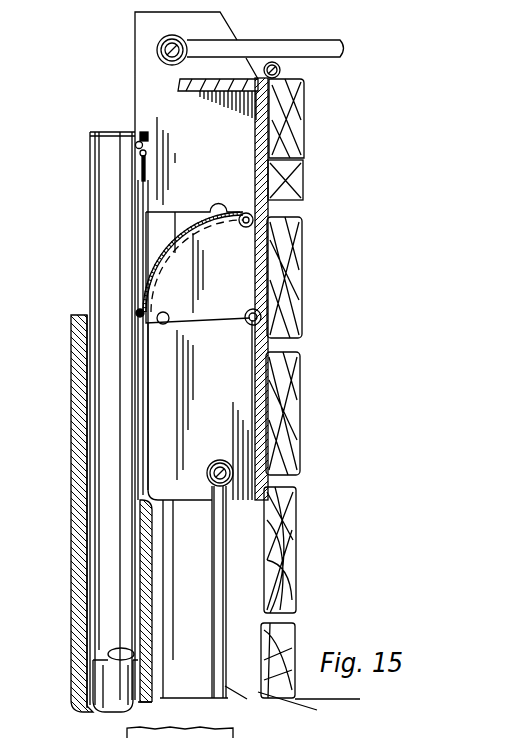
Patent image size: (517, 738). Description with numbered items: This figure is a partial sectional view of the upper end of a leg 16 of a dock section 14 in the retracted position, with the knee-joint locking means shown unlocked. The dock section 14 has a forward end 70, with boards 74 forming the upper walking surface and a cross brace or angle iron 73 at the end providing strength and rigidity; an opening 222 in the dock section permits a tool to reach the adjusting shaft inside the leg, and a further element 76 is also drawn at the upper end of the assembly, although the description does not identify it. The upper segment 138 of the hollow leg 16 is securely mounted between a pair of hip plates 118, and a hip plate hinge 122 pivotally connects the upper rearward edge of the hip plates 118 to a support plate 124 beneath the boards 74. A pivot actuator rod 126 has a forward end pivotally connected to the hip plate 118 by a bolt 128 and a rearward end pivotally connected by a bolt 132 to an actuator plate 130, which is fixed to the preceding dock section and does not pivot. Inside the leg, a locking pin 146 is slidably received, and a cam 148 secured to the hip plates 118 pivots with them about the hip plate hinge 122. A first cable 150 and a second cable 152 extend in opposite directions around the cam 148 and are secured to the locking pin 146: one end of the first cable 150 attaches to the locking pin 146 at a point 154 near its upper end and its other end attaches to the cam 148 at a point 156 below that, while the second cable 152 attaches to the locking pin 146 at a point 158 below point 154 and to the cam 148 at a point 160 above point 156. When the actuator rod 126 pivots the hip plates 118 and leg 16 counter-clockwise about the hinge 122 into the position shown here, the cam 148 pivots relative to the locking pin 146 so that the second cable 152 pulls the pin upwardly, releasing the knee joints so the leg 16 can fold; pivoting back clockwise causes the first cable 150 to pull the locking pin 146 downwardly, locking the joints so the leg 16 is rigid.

The dock section 14 is at (317, 370).
The leg 16 is at (70, 511).
The forward end 70 is at (307, 133).
The cross brace or angle iron 73 is at (307, 107).
The boards 74 is at (287, 417).
The bolt 76 is at (272, 62).
The hip plates 118 is at (233, 402).
The hip plate hinge 122 is at (262, 318).
The support plate 124 is at (302, 240).
The pivot actuator rod 126 is at (322, 54).
The bolt 128 is at (237, 483).
The actuator plate 130 is at (147, 70).
The bolt 132 is at (157, 44).
The upper segment 138 is at (68, 548).
The locking pin 146 is at (103, 292).
The cam 148 is at (237, 267).
The first cable 150 is at (140, 218).
The second cable 152 is at (253, 214).
The connection point 154 is at (140, 131).
The connection point 156 is at (163, 325).
The connection point 158 is at (137, 316).
The connection point 160 is at (305, 180).
The opening 222 is at (307, 160).